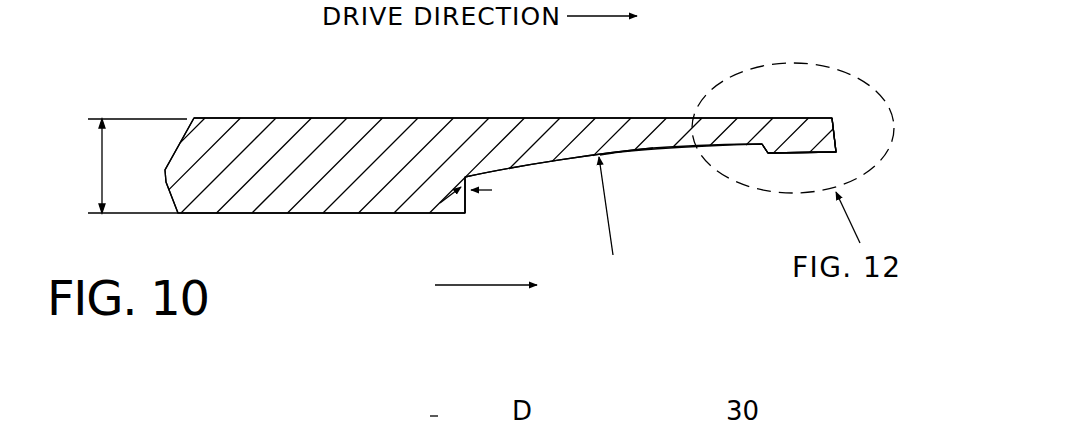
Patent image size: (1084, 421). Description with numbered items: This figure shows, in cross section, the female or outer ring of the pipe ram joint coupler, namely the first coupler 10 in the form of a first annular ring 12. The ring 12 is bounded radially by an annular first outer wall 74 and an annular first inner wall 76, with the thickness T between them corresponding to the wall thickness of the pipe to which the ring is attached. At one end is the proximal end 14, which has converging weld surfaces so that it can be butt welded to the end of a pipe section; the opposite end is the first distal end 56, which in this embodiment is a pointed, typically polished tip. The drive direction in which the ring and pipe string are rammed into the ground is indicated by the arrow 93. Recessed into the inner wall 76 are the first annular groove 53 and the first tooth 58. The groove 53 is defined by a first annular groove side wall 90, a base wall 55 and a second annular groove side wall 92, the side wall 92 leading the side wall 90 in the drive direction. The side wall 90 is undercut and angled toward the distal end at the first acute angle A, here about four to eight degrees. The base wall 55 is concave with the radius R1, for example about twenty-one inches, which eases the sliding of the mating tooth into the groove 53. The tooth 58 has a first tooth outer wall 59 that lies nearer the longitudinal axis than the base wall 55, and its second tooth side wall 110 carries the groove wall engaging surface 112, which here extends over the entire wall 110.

The first coupler 10 is at (273, 98).
The first annular ring 12 is at (327, 117).
The first outer wall 74 is at (400, 117).
The first inner wall 76 is at (316, 213).
The proximal end 14 is at (163, 182).
The thickness T is at (102, 176).
The first acute angle A is at (467, 177).
The first annular groove side wall 90 is at (470, 200).
The first annular groove 53 is at (555, 183).
The radius of the first groove base wall R1 is at (607, 202).
The base wall 55 is at (654, 152).
The drive direction arrow 93 is at (590, 17).
The first tooth 58 is at (788, 135).
The second tooth side wall 110 is at (843, 122).
The first tooth side wall groove wall engaging surface 112 is at (837, 128).
The first distal end 56 is at (834, 152).
The second annular groove side wall 92 is at (762, 147).
The first tooth outer wall 59 is at (798, 155).